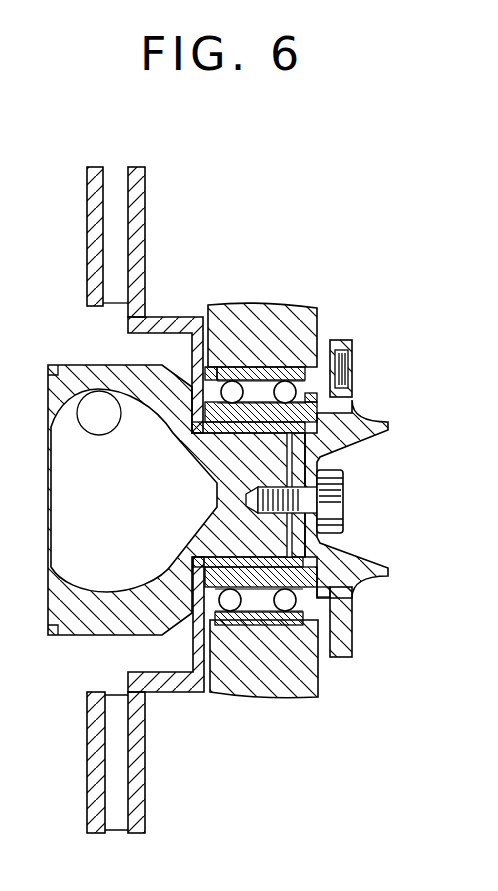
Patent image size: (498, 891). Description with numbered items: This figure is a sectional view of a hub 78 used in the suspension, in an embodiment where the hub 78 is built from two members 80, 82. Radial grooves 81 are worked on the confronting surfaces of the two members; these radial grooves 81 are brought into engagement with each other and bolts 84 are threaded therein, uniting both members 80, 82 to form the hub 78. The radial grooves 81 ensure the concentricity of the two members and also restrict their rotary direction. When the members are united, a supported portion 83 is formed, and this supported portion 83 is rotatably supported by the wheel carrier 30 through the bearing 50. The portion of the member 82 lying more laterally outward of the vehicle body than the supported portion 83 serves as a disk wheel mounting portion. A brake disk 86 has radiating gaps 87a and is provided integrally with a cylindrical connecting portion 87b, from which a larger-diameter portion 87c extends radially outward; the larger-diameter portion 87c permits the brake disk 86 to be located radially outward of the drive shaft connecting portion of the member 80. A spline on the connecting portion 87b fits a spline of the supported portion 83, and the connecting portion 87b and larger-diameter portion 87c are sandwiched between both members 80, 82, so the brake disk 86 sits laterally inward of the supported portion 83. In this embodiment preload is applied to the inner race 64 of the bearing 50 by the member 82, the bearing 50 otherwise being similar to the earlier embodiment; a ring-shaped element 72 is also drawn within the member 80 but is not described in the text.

The wheel carrier 30 is at (293, 322).
The bearing 50 is at (252, 353).
The inner race 64 is at (309, 391).
The O-ring 72 is at (90, 422).
The hub 78 is at (358, 402).
The member 80 is at (74, 608).
The radial grooves 81 is at (265, 585).
The member 82 is at (366, 432).
The supported portion 83 is at (300, 457).
The bolts 84 is at (347, 512).
The brake disk 86 is at (92, 211).
The radiating gaps 87a is at (118, 183).
The cylindrical connecting portion 87b is at (214, 372).
The larger-diameter portion 87c is at (192, 350).